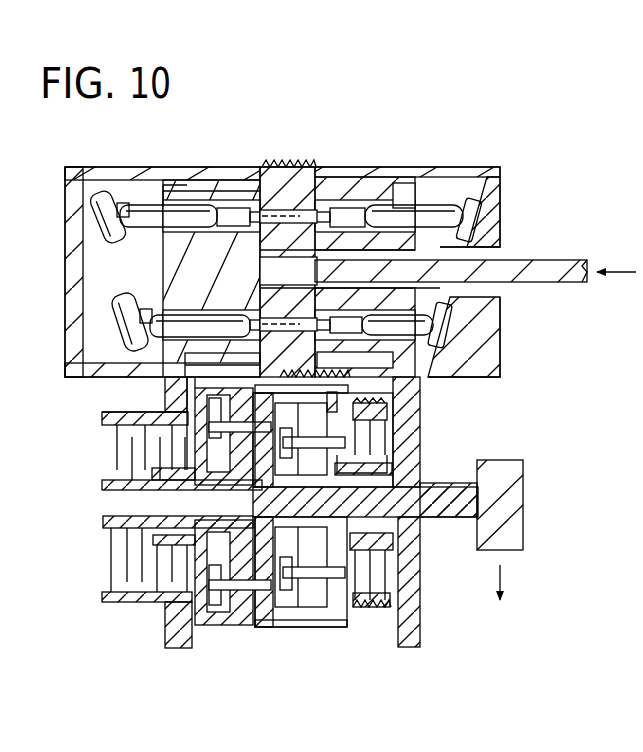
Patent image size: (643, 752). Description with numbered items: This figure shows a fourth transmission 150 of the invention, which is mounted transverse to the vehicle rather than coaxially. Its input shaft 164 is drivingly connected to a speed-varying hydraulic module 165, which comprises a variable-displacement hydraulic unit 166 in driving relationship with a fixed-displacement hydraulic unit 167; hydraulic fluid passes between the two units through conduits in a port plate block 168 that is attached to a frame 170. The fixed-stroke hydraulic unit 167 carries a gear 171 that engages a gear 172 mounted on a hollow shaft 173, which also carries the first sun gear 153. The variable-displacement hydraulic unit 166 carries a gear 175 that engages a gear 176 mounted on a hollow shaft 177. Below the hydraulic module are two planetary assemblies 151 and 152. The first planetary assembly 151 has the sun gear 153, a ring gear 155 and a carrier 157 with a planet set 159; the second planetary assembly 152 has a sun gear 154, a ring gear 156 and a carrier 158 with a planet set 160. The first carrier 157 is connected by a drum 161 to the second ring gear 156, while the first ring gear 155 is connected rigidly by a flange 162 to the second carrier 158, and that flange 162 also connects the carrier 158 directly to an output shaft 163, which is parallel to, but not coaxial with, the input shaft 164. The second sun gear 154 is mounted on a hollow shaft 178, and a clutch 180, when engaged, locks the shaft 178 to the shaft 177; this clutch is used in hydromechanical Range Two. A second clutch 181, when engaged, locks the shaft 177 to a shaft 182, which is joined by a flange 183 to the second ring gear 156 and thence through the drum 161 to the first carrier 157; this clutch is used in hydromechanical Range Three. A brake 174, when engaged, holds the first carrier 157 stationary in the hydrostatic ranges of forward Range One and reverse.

The fourth transmission 150 is at (428, 141).
The first planetary assembly 151 is at (292, 630).
The second planetary assembly 152 is at (238, 607).
The first sun gear 153 is at (315, 610).
The second sun gear 154 is at (168, 610).
The first ring gear 155 is at (322, 600).
The second ring gear 156 is at (253, 615).
The first carrier 157 is at (380, 465).
The second carrier 158 is at (215, 445).
The first planet set 159 is at (390, 418).
The second planet set 160 is at (240, 542).
The drum 161 is at (322, 387).
The flange 162 is at (268, 493).
The output shaft 163 is at (435, 505).
The input shaft 164 is at (574, 262).
The speed-varying hydraulic module 165 is at (253, 147).
The variable-displacement hydraulic unit 166 is at (178, 265).
The fixed-displacement hydraulic unit 167 is at (406, 248).
The port plate block 168 is at (303, 180).
The frame 170 is at (300, 160).
The gear 171 is at (503, 355).
The gear 172 is at (417, 466).
The hollow shaft 173 is at (413, 564).
The brake 174 is at (392, 432).
The gear 175 is at (170, 352).
The gear 176 is at (165, 388).
The hollow shaft 177 is at (108, 418).
The hollow shaft 178 is at (105, 528).
The clutch 180 is at (112, 450).
The clutch 181 is at (150, 447).
The shaft 182 is at (155, 481).
The flange 183 is at (192, 411).